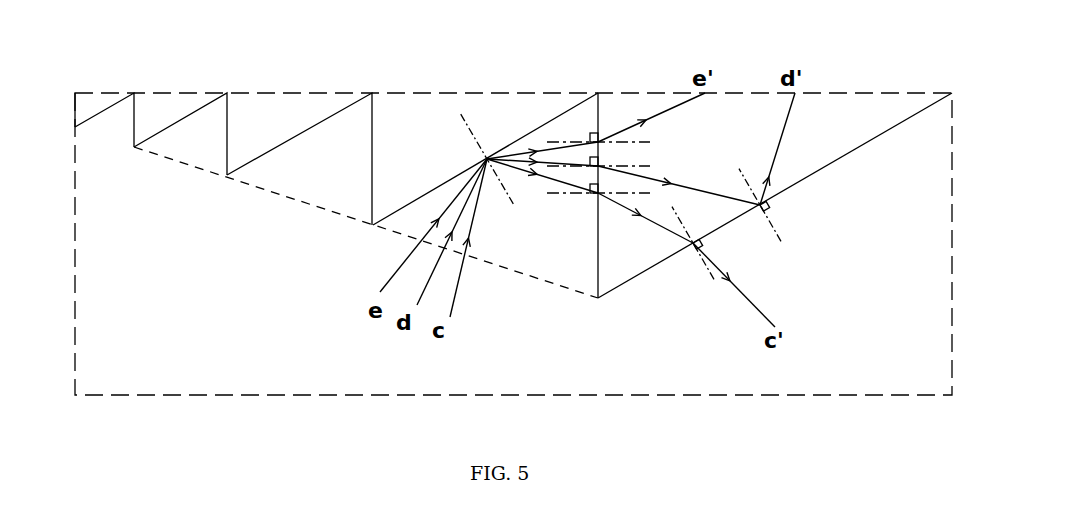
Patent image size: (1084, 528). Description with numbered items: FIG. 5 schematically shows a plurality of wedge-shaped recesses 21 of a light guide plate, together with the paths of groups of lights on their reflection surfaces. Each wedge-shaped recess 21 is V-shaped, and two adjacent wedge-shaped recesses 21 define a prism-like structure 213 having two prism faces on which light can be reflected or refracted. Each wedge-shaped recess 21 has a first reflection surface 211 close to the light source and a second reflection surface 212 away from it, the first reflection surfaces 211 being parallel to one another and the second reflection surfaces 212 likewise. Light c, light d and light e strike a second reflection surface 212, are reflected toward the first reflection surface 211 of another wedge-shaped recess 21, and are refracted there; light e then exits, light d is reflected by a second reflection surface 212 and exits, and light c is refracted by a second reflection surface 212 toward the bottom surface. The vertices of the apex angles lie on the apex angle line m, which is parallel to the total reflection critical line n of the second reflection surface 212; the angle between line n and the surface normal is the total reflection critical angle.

The wedge-shaped recess 21 is at (155, 110).
The first reflection surface 211 is at (600, 122).
The second reflection surface 212 is at (548, 120).
The prism-like structure 213 is at (115, 123).
The apex angle line m is at (297, 200).
The total reflection critical line n is at (548, 172).